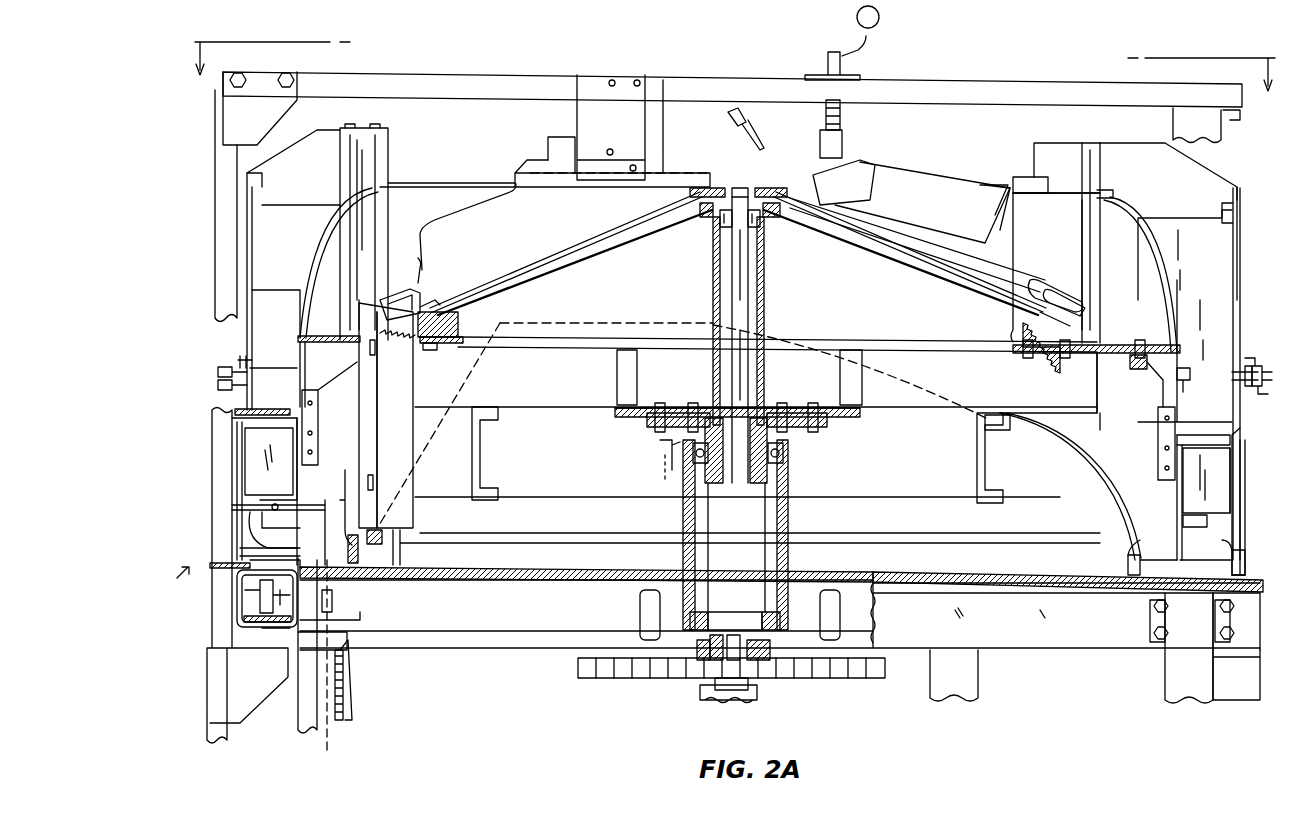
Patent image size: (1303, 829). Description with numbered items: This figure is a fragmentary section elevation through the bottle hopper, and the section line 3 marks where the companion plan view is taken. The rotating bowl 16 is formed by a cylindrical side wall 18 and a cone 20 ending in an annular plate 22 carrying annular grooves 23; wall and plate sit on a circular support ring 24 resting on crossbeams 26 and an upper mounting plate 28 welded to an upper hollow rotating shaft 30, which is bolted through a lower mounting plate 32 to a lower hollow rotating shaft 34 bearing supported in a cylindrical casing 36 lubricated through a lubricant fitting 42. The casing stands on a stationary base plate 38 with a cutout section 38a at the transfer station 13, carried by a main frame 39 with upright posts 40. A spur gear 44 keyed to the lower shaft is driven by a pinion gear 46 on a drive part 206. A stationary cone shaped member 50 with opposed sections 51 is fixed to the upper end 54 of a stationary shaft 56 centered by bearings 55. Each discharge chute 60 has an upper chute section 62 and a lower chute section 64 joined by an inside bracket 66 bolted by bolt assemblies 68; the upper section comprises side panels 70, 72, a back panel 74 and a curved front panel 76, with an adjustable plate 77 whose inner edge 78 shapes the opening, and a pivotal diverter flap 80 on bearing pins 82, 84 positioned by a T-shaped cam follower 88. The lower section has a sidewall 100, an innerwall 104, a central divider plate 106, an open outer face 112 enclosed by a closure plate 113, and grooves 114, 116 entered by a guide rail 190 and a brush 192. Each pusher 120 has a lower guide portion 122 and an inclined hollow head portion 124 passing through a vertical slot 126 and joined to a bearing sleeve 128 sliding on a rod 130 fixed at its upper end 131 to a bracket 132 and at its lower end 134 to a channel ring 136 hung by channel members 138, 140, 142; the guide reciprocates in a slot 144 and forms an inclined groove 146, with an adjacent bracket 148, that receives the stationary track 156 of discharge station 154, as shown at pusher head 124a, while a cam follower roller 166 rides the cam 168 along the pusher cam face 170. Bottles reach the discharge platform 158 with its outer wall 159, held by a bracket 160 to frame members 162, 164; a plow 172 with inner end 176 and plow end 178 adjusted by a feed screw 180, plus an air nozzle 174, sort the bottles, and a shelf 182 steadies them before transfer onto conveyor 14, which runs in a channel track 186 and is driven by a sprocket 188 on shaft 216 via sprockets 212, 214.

The section line 3 is at (735, 55).
The transfer station 13 is at (173, 584).
The conveyor 14 is at (245, 557).
The bowl 16 is at (1061, 199).
The cylindrical side wall 18 is at (476, 220).
The cone 20 is at (603, 250).
The annular plate 22 is at (1022, 344).
The annular grooves 23 is at (1090, 340).
The circular support ring 24 is at (316, 336).
The crossbeams 26 is at (638, 380).
The upper mounting plate 28 is at (852, 417).
The upper hollow rotating shaft 30 is at (765, 320).
The lower mounting plate 32 is at (825, 428).
The lower hollow rotating shaft 34 is at (772, 480).
The cylindrical casing 36 is at (786, 530).
The base plate 38 is at (582, 568).
The cutout section 38a is at (273, 530).
The main frame 39 is at (1080, 672).
The upright posts 40 is at (304, 705).
The lubricant fitting 42 is at (665, 453).
The spur gear 44 is at (820, 680).
The pinion gear 46 is at (760, 686).
The stationary cone shaped member 50 is at (690, 193).
The opposed sections 51 is at (574, 250).
The upper end 54 is at (748, 188).
The bearings 55 is at (764, 228).
The stationary shaft 56 is at (763, 275).
The bottle discharge chutes 60 is at (1255, 197).
The upper chute section 62 is at (247, 331).
The lower chute section 64 is at (300, 490).
The inside bracket 66 is at (318, 410).
The bolt assemblies 68 is at (1140, 370).
The side panel 70 is at (1195, 175).
The side panel 72 is at (1090, 160).
The back panel 74 is at (1242, 270).
The curved front panel 76 is at (1145, 268).
The adjustable plate 77 is at (1027, 175).
The inner edge 78 is at (1090, 152).
The pivotal diverter flap 80 is at (1185, 316).
The bearing pin 82 is at (1186, 372).
The bearing pin 84 is at (1230, 375).
The T-shaped cam follower 88 is at (225, 360).
The sidewall 100 is at (1220, 440).
The innerwall 104 is at (1177, 490).
The central divider plate 106 is at (1206, 480).
The outer face 112 is at (1236, 455).
The closure plate 113 is at (225, 440).
The groove 114 is at (1185, 521).
The groove 116 is at (243, 545).
The pusher 120 is at (408, 420).
The lower guide portion 122 is at (386, 415).
The inclined hollow head portion 124 is at (420, 280).
The pusher head 124a is at (1062, 305).
The vertical slot 126 is at (387, 230).
The bearing sleeve 128 is at (374, 392).
The rod 130 is at (380, 164).
The upper end 131 is at (362, 125).
The bracket 132 is at (345, 163).
The lower end 134 is at (375, 543).
The channel ring 136 is at (400, 555).
The channel member 138 is at (554, 505).
The channel member 140 is at (498, 450).
The channel member 142 is at (565, 398).
The slot 144 is at (432, 343).
The inclined groove 146 is at (425, 306).
The bracket 148 is at (400, 302).
The discharge station 154 is at (1012, 245).
The stationary track 156 is at (1072, 325).
The discharge platform 158 is at (558, 183).
The outer wall 159 is at (560, 145).
The bracket 160 is at (620, 127).
The frame member 162 is at (508, 80).
The frame member 164 is at (222, 158).
The cam follower roller 166 is at (345, 510).
The cam 168 is at (360, 565).
The pusher cam face 170 is at (1080, 480).
The plow 172 is at (918, 190).
The air nozzle 174 is at (753, 130).
The inner end 176 is at (992, 192).
The plow end 178 is at (835, 175).
The feed screw 180 is at (843, 114).
The shelf 182 is at (258, 410).
The channel track 186 is at (245, 612).
The sprocket 188 is at (275, 639).
The guide rail 190 is at (262, 508).
The brush 192 is at (276, 521).
The bracket 206 is at (708, 690).
The sprocket 212 is at (343, 720).
The sprocket 214 is at (328, 598).
The shaft 216 is at (345, 617).